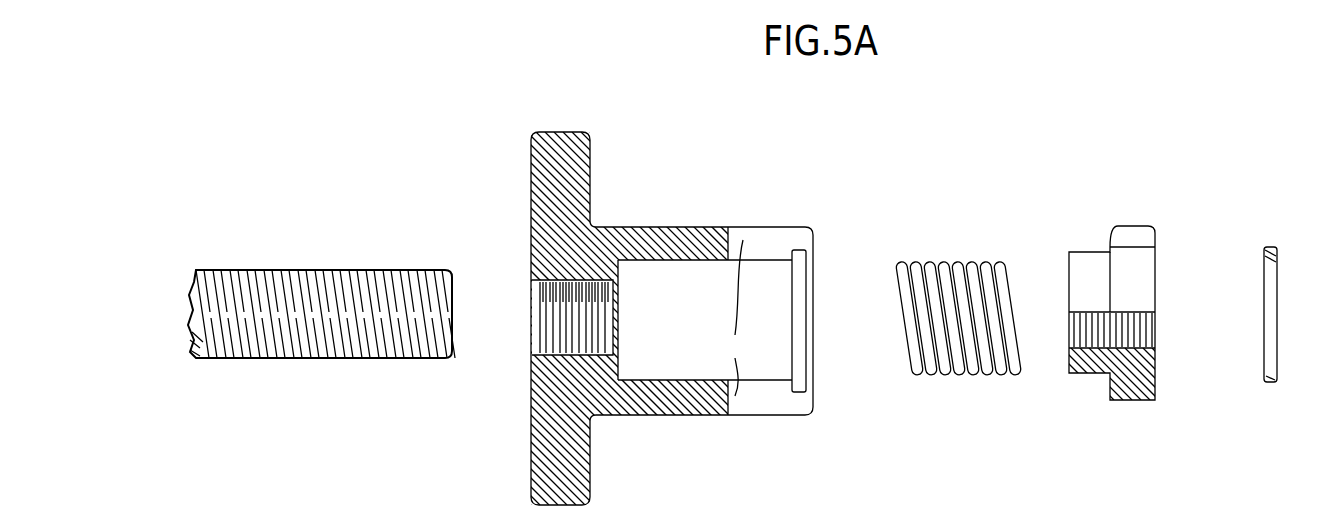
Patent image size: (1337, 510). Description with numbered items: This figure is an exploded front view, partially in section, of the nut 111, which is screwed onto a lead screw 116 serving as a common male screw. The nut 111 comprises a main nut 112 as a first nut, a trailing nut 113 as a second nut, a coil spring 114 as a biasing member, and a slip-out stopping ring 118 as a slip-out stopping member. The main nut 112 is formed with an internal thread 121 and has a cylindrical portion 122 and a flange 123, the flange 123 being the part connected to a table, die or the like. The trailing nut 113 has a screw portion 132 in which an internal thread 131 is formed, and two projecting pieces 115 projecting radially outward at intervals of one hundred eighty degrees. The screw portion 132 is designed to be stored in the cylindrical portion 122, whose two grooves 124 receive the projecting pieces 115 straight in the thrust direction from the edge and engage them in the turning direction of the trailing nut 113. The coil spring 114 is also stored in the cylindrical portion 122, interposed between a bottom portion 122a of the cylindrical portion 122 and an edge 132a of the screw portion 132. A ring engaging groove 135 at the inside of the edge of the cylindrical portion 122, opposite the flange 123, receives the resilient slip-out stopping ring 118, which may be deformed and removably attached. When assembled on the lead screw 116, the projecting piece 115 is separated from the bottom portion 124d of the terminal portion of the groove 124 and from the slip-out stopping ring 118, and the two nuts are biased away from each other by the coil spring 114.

The nut 111 is at (812, 168).
The main nut 112 is at (598, 151).
The trailing nut 113 is at (1129, 210).
The coil spring 114 is at (958, 262).
The projecting pieces 115 is at (1135, 232).
The lead screw 116 is at (385, 262).
The slip-out stopping ring 118 is at (1272, 245).
The internal thread 121 is at (537, 300).
The cylindrical portion 122 is at (693, 227).
The bottom portion 122a is at (637, 268).
The flange 123 is at (590, 184).
The grooves 124 is at (762, 243).
The bottom portion of the groove 124d is at (725, 318).
The internal thread 131 is at (1145, 335).
The screw portion 132 is at (1090, 252).
The edge of the screw portion 132a is at (1068, 273).
The ring engaging groove 135 is at (799, 300).